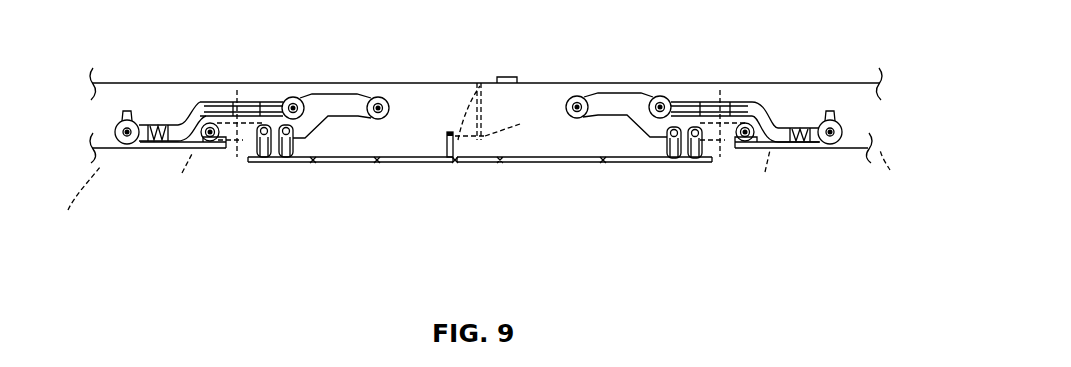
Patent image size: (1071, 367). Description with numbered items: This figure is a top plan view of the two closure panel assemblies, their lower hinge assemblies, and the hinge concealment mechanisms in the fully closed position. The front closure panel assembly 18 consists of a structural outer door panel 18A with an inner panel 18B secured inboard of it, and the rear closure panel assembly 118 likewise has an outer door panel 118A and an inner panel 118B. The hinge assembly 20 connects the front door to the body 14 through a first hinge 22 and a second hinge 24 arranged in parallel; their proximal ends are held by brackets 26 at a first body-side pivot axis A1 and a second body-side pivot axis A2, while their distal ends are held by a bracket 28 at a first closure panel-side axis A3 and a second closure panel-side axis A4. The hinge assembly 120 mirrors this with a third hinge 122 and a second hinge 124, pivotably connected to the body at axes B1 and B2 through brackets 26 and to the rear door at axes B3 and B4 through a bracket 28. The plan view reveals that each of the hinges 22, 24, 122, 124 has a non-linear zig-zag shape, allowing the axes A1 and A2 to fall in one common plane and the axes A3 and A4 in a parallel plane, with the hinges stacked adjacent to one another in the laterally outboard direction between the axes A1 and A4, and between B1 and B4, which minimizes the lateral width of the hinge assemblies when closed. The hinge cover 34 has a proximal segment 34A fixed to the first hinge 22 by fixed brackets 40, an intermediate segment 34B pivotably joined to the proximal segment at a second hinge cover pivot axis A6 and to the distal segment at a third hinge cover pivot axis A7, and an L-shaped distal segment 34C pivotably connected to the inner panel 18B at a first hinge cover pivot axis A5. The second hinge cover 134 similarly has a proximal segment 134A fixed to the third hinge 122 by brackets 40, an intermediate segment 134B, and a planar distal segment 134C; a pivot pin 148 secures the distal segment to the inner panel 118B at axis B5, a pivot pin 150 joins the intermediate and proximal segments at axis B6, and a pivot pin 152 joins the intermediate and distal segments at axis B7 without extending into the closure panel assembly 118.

The body 14 is at (167, 148).
The closure panel assembly 18 is at (95, 115).
The door panel 18A is at (108, 80).
The inner panel 18B is at (477, 83).
The hinge assembly 20 is at (222, 90).
The first hinge 22 is at (328, 123).
The second hinge 24 is at (200, 110).
The brackets 26 is at (479, 199).
The bracket 28 is at (347, 92).
The hinge cover 34 is at (235, 185).
The proximal segment 34A is at (290, 163).
The intermediate segment 34B is at (350, 163).
The distal segment 34C is at (382, 165).
The brackets 40 is at (263, 162).
The closure panel assembly 118 is at (868, 120).
The door panel 118A is at (857, 82).
The inner panel 118B is at (515, 118).
The hinge assembly 120 is at (749, 88).
The third hinge 122 is at (630, 120).
The second hinge 124 is at (765, 102).
The second hinge cover 134 is at (690, 183).
The proximal segment 134A is at (642, 163).
The intermediate segment 134B is at (557, 163).
The distal segment 134C is at (460, 163).
The pivot pin 148 is at (447, 163).
The pivot pin 150 is at (604, 163).
The pivot pin 152 is at (500, 163).
The first body-side pivot axis A1 is at (208, 127).
The second body-side pivot axis A2 is at (123, 147).
The first closure panel-side axis A3 is at (376, 100).
The second closure panel-side axis A4 is at (289, 100).
The first hinge cover pivot axis A5 is at (448, 128).
The second hinge cover pivot axis A6 is at (313, 164).
The third hinge cover pivot axis A7 is at (378, 156).
The first body-side pivot axis B1 is at (740, 150).
The second body-side pivot axis B2 is at (822, 150).
The first closure panel-side axis B3 is at (578, 98).
The second closure panel-side axis B4 is at (664, 98).
The first hinge cover pivot axis B5 is at (457, 165).
The second hinge cover pivot axis B6 is at (548, 165).
The third hinge cover pivot axis B7 is at (502, 159).